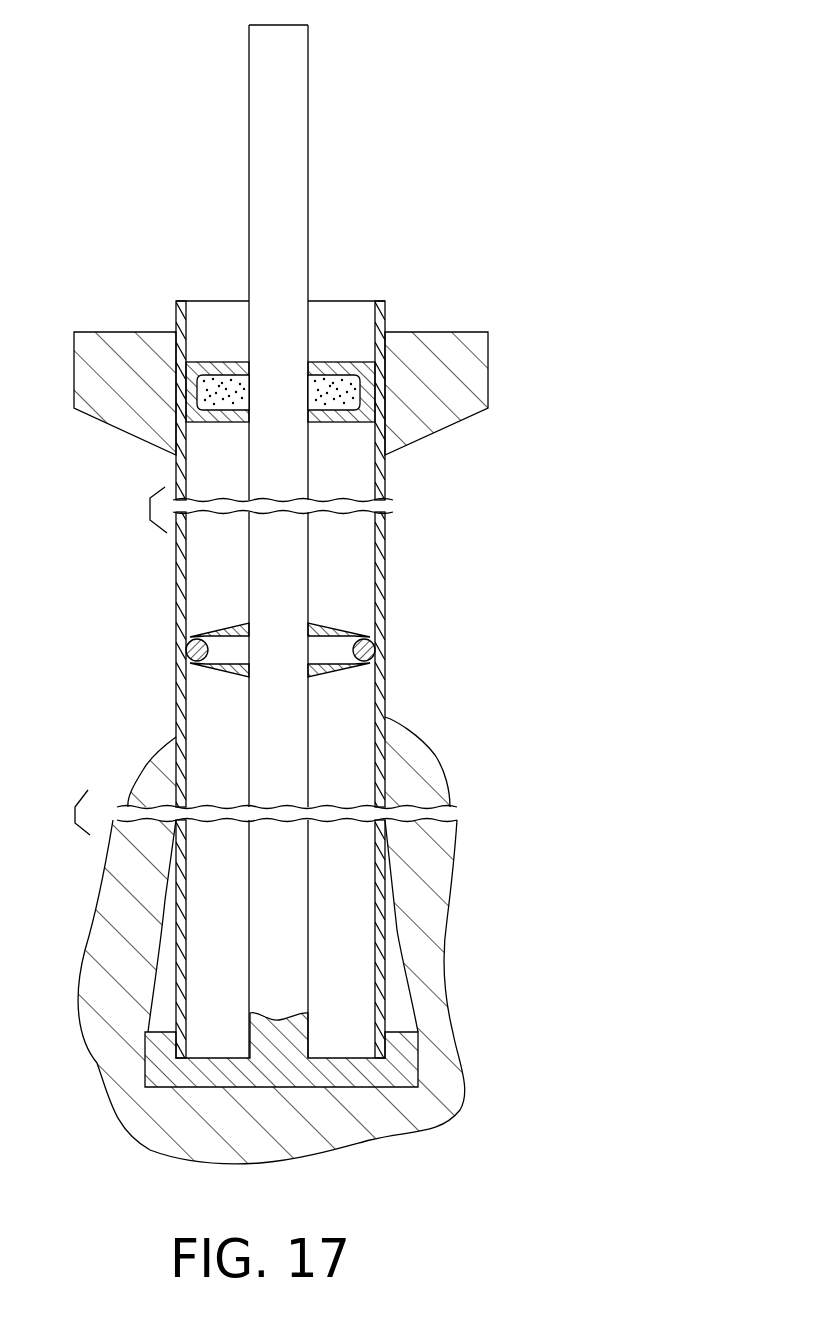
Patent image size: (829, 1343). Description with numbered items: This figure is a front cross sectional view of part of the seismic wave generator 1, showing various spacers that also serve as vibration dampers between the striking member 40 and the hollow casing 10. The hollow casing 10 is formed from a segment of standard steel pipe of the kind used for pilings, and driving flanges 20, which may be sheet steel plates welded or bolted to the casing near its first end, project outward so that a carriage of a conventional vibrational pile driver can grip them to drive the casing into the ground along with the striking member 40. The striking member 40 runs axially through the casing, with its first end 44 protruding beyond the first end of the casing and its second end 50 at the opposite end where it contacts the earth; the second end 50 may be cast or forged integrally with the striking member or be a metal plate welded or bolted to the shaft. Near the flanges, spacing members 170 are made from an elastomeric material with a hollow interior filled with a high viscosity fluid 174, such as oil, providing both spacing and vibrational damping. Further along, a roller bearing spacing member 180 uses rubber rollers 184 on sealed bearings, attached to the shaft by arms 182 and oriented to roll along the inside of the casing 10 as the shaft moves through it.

The seismic wave generator 1 is at (105, 270).
The hollow casing 10 is at (385, 541).
The driving flanges 20 is at (438, 347).
The striking member 40 is at (297, 213).
The first end of striking member 44 is at (267, 25).
The second end of striking member 50 is at (148, 1025).
The spacing members 170 is at (347, 345).
The high viscosity fluid 174 is at (338, 403).
The roller bearing spacing member 180 is at (213, 618).
The arms 182 is at (333, 625).
The rubber rollers 184 is at (188, 642).